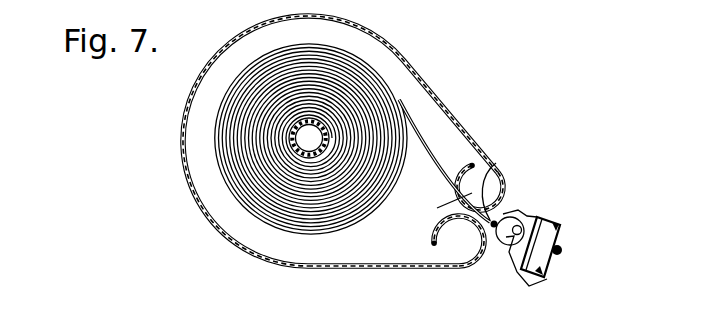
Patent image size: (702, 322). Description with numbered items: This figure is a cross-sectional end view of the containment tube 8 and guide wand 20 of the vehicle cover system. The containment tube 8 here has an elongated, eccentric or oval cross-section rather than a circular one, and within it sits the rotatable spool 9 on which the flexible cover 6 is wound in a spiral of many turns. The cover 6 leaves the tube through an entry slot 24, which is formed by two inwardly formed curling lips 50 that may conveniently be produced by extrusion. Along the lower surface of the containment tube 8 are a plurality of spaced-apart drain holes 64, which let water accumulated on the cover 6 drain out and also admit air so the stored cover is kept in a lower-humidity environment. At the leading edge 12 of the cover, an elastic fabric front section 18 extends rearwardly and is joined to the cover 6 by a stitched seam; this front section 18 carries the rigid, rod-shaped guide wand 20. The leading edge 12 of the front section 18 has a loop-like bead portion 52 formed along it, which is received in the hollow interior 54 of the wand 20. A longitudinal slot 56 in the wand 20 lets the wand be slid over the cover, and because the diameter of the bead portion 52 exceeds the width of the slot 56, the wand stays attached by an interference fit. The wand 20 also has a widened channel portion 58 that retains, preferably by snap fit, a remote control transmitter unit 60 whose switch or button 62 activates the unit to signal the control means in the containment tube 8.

The flexible cover portion 6 is at (403, 53).
The containment tube 8 is at (432, 78).
The rotatable spool 9 is at (297, 135).
The leading edge 12 is at (500, 167).
The elastic fabric front section 18 is at (422, 157).
The guide wand 20 is at (541, 208).
The entry slot 24 is at (437, 208).
The curling lips 50 is at (481, 145).
The bead portion 52 is at (505, 246).
The hollow interior 54 is at (533, 240).
The longitudinal slot 56 is at (496, 223).
The widened channel portion 58 is at (546, 270).
The remote control transmitter unit 60 is at (545, 248).
The switch or button 62 is at (566, 257).
The drain holes 64 is at (375, 270).